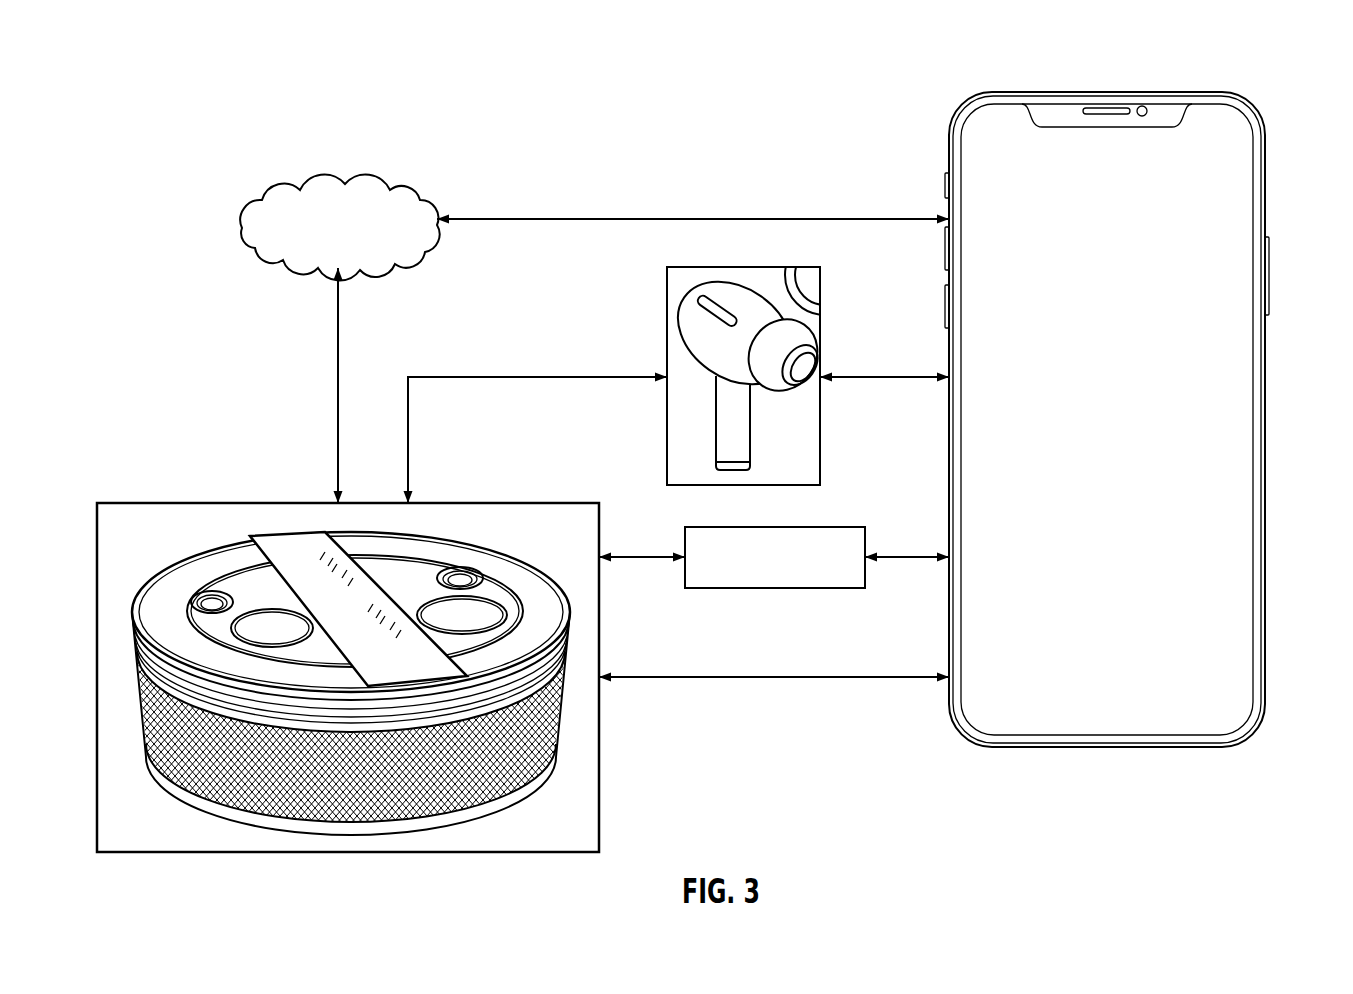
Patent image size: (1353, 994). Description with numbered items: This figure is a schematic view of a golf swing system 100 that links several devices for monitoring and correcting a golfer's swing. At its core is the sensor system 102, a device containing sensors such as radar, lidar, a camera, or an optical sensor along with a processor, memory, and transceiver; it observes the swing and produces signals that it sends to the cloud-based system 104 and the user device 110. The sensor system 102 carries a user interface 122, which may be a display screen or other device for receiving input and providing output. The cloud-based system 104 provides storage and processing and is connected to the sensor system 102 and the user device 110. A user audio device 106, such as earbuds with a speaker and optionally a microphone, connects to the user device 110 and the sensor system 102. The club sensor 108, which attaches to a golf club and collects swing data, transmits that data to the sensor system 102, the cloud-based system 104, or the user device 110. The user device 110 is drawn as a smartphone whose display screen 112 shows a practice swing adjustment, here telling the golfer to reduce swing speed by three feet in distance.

The golf swing system 100 is at (1266, 68).
The sensor system 102 is at (380, 650).
The cloud-based system 104 is at (263, 220).
The user audio device 106 is at (697, 305).
The club sensor 108 is at (807, 525).
The user device 110 is at (1255, 445).
The display screen 112 is at (1202, 567).
The user interface 122 is at (277, 533).